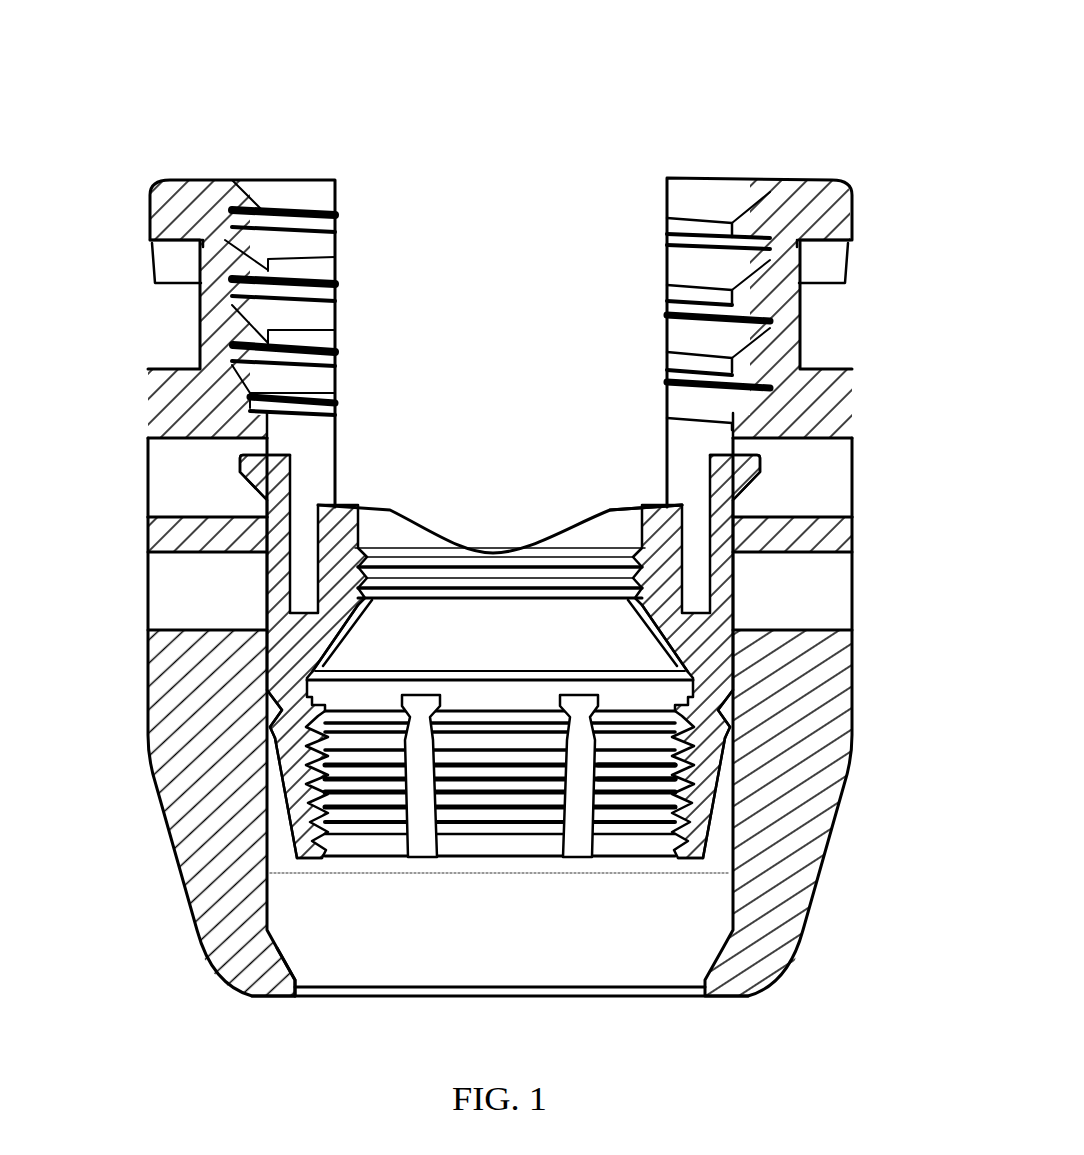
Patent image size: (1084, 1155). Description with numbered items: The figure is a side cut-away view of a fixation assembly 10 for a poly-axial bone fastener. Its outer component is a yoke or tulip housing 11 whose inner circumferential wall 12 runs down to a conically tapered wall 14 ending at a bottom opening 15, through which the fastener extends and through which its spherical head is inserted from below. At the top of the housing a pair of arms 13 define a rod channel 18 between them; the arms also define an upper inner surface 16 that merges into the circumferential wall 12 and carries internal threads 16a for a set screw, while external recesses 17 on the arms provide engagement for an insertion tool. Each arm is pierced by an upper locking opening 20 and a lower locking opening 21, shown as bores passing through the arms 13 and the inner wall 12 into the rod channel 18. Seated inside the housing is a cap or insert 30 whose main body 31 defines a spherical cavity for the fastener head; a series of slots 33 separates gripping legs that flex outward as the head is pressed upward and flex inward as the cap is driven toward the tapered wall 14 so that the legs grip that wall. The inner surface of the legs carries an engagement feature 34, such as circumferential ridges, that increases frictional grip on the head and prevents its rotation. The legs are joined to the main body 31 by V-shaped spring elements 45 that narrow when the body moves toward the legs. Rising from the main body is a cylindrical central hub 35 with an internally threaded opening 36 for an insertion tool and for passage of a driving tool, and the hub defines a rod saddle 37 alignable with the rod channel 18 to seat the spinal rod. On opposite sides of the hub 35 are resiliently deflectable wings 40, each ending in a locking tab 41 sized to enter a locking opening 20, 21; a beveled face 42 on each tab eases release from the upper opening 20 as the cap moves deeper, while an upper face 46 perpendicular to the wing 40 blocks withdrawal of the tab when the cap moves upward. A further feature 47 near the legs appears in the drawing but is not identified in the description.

The fixation assembly 10 is at (812, 96).
The tulip housing 11 is at (168, 172).
The inner circumferential wall 12 is at (717, 847).
The arms 13 is at (175, 408).
The conically tapered wall 14 is at (290, 943).
The opening 15 is at (612, 995).
The upper inner surface 16 is at (312, 462).
The internal threads 16a is at (683, 222).
The external recesses 17 is at (200, 330).
The rod channel 18 is at (338, 238).
The upper locking openings 20 is at (180, 475).
The lower locking openings 21 is at (175, 605).
The cap 30 is at (256, 699).
The main body 31 is at (680, 643).
The slots 33 is at (690, 860).
The engagement feature 34 is at (680, 785).
The cylindrical central hub 35 is at (645, 510).
The internally threaded opening 36 is at (575, 565).
The rod saddle 37 is at (420, 520).
The resiliently deflectable wings 40 is at (270, 570).
The locking tab 41 is at (752, 468).
The beveled face 42 is at (245, 487).
The spring elements 45 is at (265, 745).
The upper face 46 is at (290, 838).
The jaw 47 is at (283, 805).